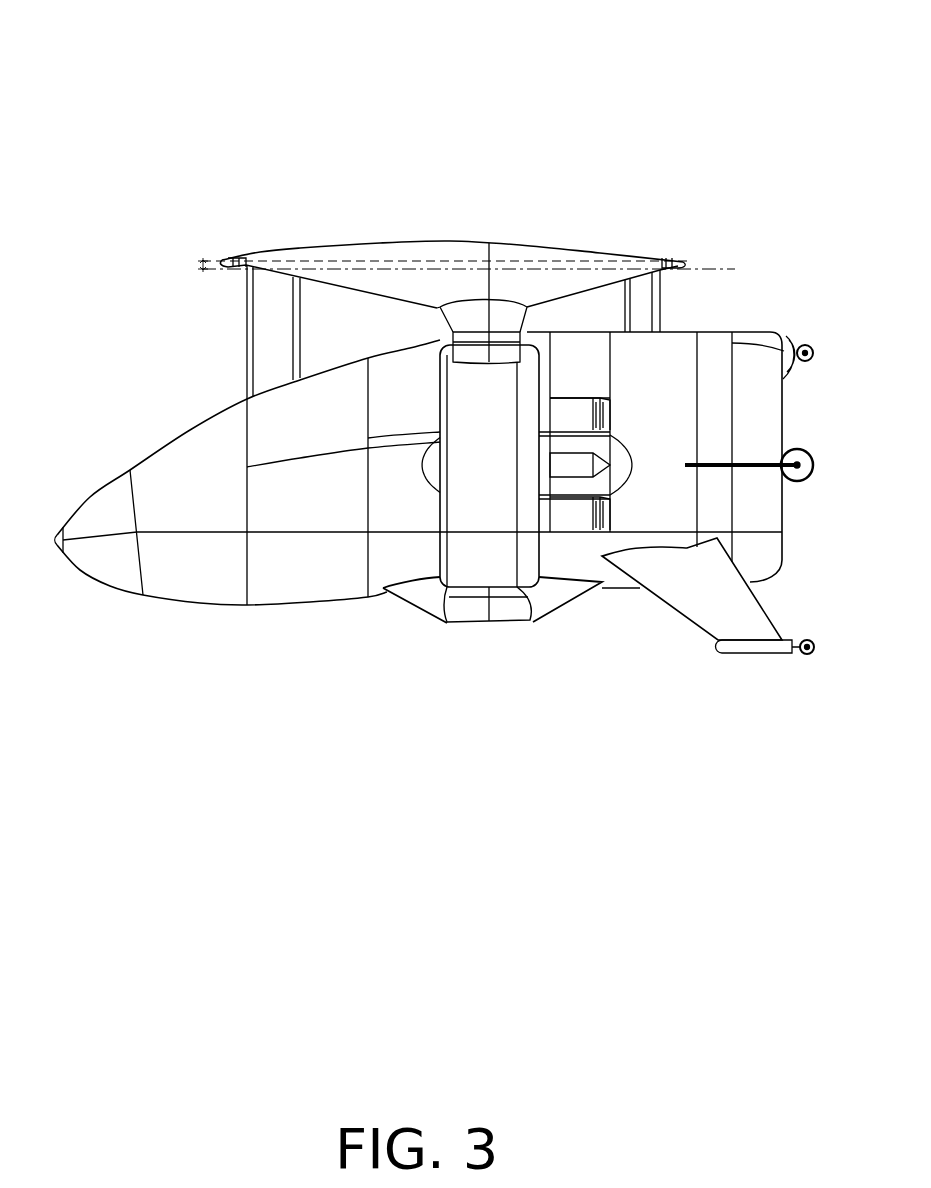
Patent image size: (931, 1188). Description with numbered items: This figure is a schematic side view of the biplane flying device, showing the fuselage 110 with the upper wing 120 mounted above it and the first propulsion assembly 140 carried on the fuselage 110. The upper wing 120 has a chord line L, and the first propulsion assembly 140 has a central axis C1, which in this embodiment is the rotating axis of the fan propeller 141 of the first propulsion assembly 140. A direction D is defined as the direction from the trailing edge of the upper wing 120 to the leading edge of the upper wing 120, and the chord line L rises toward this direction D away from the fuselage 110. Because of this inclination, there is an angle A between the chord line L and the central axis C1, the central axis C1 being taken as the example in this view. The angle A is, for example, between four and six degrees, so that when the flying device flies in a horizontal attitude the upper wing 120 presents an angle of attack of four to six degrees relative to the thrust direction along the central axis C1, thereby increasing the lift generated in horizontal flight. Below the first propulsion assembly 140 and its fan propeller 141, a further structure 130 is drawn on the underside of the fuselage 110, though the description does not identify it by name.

The fuselage 110 is at (282, 576).
The upper wing 120 is at (432, 252).
The nozzle fairing 130 is at (433, 598).
The first propulsion assembly 140 is at (541, 538).
The fan propeller 141 is at (500, 547).
The direction D is at (383, 103).
The chord line L is at (203, 259).
The angle A is at (202, 268).
The central axis C1 is at (204, 272).